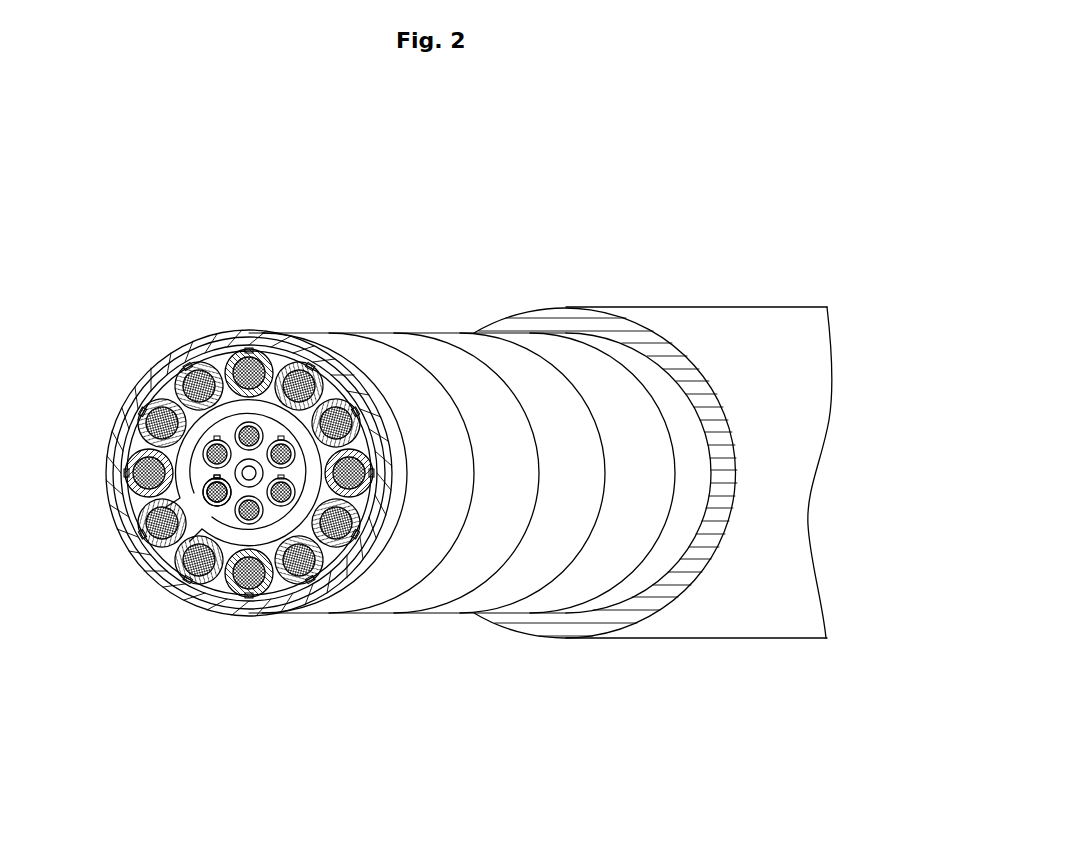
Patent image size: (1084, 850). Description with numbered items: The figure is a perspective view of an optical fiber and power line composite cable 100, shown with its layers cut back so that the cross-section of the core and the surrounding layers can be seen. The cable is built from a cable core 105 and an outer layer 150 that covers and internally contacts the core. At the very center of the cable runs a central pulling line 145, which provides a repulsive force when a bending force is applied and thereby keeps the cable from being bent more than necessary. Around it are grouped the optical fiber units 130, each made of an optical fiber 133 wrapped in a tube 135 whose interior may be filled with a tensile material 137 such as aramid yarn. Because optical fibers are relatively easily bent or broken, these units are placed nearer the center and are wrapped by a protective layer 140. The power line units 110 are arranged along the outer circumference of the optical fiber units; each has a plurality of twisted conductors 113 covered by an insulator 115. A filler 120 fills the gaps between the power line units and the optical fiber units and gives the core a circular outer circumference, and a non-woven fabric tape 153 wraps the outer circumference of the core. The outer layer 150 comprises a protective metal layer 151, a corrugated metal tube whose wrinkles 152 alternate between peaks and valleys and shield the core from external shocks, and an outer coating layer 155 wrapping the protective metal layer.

The optical fiber and power line composite cable 100 is at (110, 255).
The cable core 105 is at (232, 347).
The power line unit 110 is at (157, 376).
The conductor 113 is at (140, 388).
The insulator 115 is at (168, 378).
The filler 120 is at (217, 357).
The optical fiber unit 130 is at (219, 512).
The optical fiber 133 is at (211, 509).
The tube 135 is at (206, 500).
The tensile material 137 is at (217, 522).
The protective layer 140 is at (183, 456).
The central pulling line 145 is at (235, 471).
The outer layer 150 is at (663, 216).
The protective metal layer 151 is at (467, 367).
The wrinkles 152 is at (397, 600).
The non-woven fabric tape 153 is at (282, 336).
The outer coating layer 155 is at (670, 325).